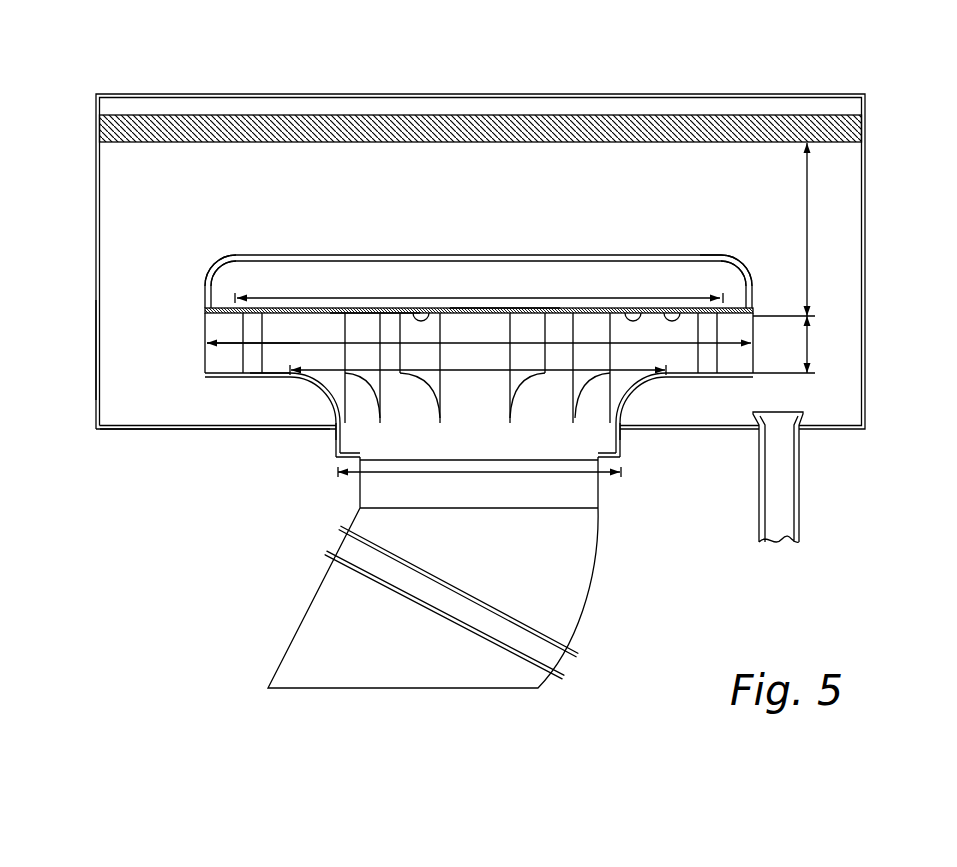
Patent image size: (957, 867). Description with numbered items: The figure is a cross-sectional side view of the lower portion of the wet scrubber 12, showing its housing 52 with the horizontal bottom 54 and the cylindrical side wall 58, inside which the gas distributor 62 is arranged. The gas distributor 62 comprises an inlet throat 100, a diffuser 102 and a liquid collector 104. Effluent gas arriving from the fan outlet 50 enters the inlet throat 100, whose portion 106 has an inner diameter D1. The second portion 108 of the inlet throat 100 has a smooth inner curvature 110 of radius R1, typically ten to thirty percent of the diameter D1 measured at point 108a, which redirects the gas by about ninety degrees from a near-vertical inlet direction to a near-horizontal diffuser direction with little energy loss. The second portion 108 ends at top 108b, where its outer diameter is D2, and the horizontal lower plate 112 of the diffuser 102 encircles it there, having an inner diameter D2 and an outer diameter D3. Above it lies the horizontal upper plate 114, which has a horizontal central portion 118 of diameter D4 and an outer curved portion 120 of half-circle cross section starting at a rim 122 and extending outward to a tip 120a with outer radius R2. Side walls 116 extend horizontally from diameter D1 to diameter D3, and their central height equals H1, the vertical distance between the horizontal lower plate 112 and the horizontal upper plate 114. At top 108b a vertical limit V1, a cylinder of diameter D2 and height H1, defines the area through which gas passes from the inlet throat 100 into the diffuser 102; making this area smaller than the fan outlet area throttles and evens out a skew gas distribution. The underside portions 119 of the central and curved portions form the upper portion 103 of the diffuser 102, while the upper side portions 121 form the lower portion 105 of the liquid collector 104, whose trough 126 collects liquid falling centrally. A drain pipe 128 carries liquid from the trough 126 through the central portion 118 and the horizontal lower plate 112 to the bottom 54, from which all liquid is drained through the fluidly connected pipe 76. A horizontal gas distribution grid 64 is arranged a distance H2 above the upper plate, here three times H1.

The wet scrubber 12 is at (95, 493).
The fan outlet 50 is at (588, 565).
The housing 52 is at (92, 293).
The horizontal bottom 54 is at (123, 429).
The side wall 58 is at (95, 382).
The gas distributor 62 is at (204, 207).
The horizontal gas distribution grid 64 is at (227, 112).
The fluidly connected pipe 76 is at (798, 468).
The inlet throat 100 is at (335, 441).
The diffuser 102 is at (197, 322).
The upper portion of diffuser 103 is at (288, 316).
The liquid collector 104 is at (320, 305).
The lower portion of liquid collector 105 is at (537, 307).
The portion of inlet throat 106 is at (622, 454).
The second portion of inlet throat 108 is at (632, 407).
The point of second portion 108a is at (307, 426).
The top of second portion 108b is at (238, 380).
The smooth inner curvature 110 is at (630, 373).
The horizontal lower plate 112 is at (233, 377).
The horizontal upper plate 114 is at (672, 312).
The side walls 116 is at (333, 386).
The horizontal central portion 118 is at (631, 312).
The underside portions 119 is at (413, 316).
The outer curved portion 120 is at (750, 268).
The tip 120a is at (714, 254).
The upper side portions 121 is at (388, 306).
The rim 122 is at (730, 281).
The trough 126 is at (240, 268).
The drain pipe 128 is at (717, 353).
The radius of inner curvature R1 is at (321, 393).
The outer radius of curved portion R2 is at (221, 296).
The vertical limit V1 is at (290, 350).
The diameter of second portion D1 is at (479, 486).
The outer diameter at top D2 is at (478, 360).
The outer diameter of lower plate D3 is at (479, 333).
The diameter of central portion D4 is at (479, 288).
The height between plates H1 is at (800, 344).
The distance to grid H2 is at (800, 229).